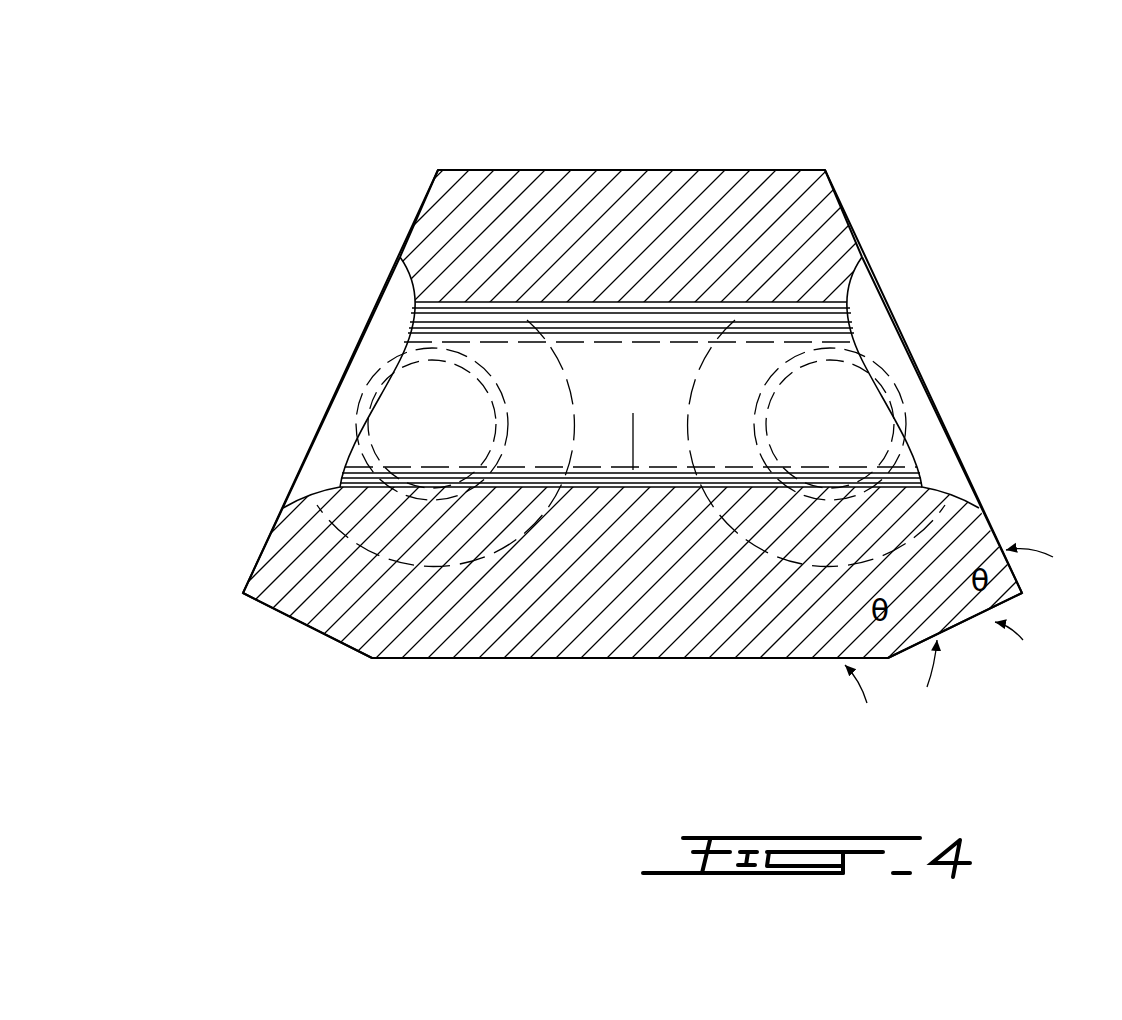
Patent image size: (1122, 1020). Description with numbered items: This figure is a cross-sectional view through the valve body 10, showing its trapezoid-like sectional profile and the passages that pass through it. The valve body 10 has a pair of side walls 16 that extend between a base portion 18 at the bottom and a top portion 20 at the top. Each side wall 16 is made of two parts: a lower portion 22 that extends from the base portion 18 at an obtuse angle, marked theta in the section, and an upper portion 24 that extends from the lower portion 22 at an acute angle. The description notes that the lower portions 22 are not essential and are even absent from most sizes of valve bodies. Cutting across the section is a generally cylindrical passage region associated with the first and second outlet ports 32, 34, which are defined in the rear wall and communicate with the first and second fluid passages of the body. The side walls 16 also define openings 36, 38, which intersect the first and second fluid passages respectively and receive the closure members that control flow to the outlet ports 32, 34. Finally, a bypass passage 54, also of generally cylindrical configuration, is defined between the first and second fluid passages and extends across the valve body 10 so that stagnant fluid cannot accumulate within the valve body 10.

The valve body 10 is at (460, 112).
The side walls 16 is at (262, 543).
The base portion 18 is at (795, 660).
The top portion 20 is at (647, 172).
The lower portion 22 is at (317, 635).
The upper portion 24 is at (410, 230).
The first outlet port 32 is at (940, 403).
The second outlet port 34 is at (435, 427).
The opening 36 is at (883, 335).
The opening 38 is at (373, 333).
The bypass passage 54 is at (633, 413).